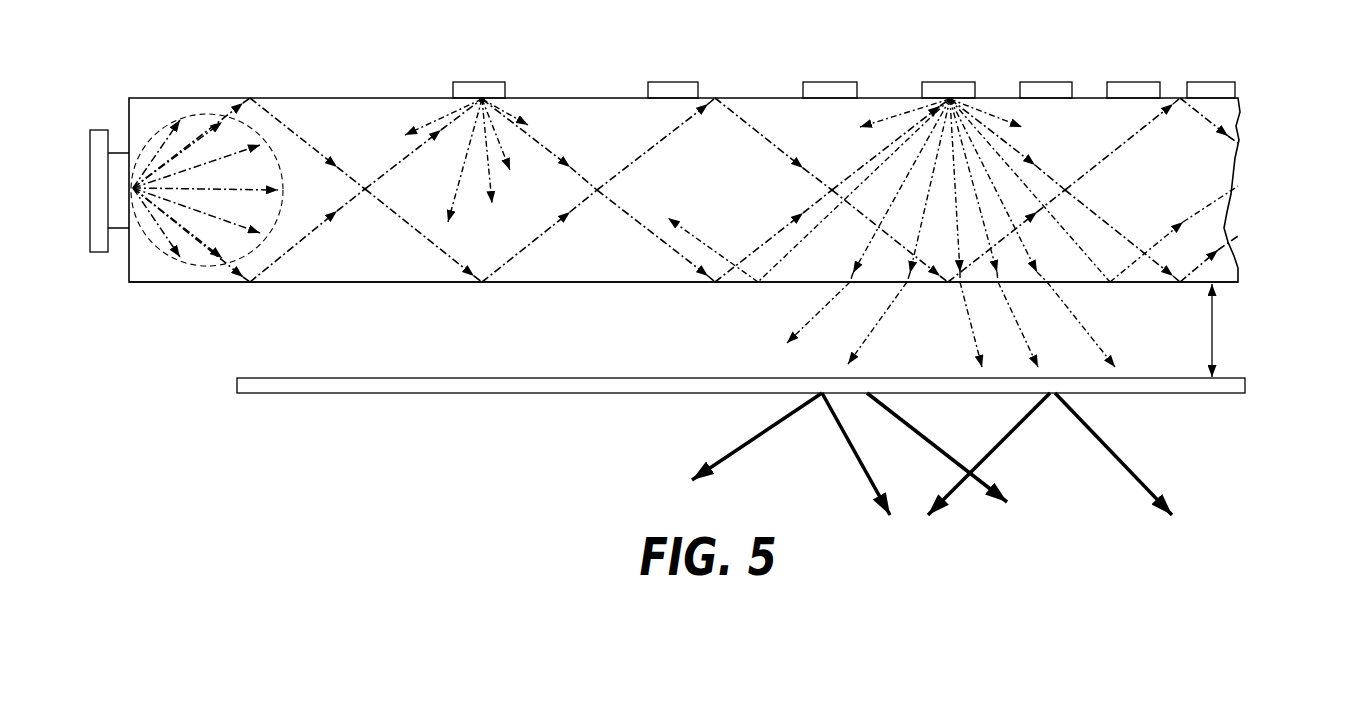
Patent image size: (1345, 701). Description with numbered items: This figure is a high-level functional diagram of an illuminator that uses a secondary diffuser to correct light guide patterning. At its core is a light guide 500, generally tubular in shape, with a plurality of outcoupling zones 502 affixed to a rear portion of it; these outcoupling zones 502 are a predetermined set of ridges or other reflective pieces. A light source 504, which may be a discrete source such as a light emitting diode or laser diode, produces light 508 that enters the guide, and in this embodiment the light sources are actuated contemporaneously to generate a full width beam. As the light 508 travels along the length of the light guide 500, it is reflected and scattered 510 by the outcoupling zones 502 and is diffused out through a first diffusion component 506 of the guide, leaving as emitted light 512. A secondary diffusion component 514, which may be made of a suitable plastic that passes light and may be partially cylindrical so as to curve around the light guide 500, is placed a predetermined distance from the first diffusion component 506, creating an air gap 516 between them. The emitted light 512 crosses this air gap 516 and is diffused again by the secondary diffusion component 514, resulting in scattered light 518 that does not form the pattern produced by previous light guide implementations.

The light guide 500 is at (1244, 132).
The outcoupling zones 502 is at (832, 82).
The light source 504 is at (100, 130).
The first diffusion component 506 is at (540, 283).
The light 508 is at (203, 268).
The scattered light 510 is at (440, 142).
The emitted light 512 is at (860, 338).
The secondary diffusion component 514 is at (1247, 383).
The air gap 516 is at (1213, 328).
The scattered light 518 is at (677, 488).